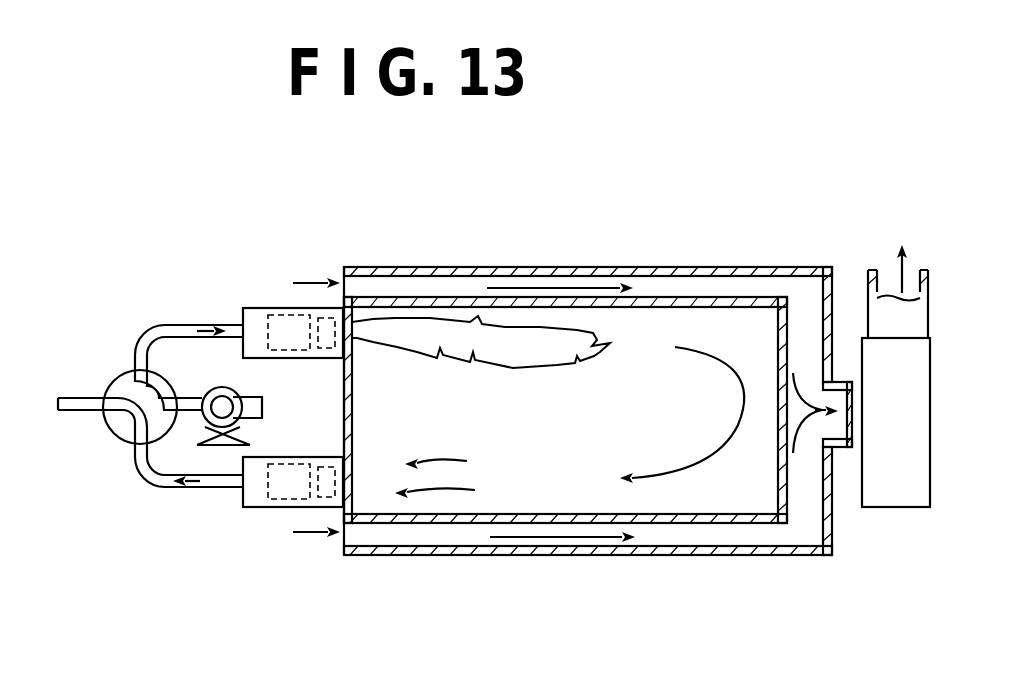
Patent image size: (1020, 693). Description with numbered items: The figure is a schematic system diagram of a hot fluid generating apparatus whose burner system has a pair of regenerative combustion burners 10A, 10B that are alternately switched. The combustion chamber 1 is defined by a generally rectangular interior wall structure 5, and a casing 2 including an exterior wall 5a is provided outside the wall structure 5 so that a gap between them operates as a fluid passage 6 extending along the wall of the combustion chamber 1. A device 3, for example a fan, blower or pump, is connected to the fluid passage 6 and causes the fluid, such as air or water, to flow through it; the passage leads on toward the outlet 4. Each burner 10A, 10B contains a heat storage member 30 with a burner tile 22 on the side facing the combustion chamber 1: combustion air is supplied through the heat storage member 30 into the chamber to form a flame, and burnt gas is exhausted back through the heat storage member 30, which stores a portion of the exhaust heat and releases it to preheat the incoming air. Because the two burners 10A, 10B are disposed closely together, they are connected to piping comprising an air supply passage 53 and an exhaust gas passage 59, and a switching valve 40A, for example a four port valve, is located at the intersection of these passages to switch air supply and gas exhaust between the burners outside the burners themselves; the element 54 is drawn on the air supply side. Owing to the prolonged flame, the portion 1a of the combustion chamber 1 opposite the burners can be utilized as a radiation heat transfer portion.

The combustion chamber 1 is at (683, 322).
The portion of the combustion chamber opposite to the burner 1a is at (775, 333).
The casing 2 is at (566, 268).
The device for causing fluid to flow 3 is at (902, 495).
The exhaust pipe 4 is at (868, 287).
The interior wall structure 5 is at (655, 525).
The exterior wall 5a is at (493, 556).
The fluid passage 6 is at (462, 283).
The regenerative combustion burner 10A is at (243, 318).
The regenerative combustion burner 10B is at (243, 498).
The burner tile 22 is at (326, 318).
The heat storage member 30 is at (286, 315).
The switching valve 40A is at (115, 380).
The air supply passage 53 is at (189, 397).
The motor 54 is at (258, 398).
The exhaust gas passage 59 is at (82, 415).